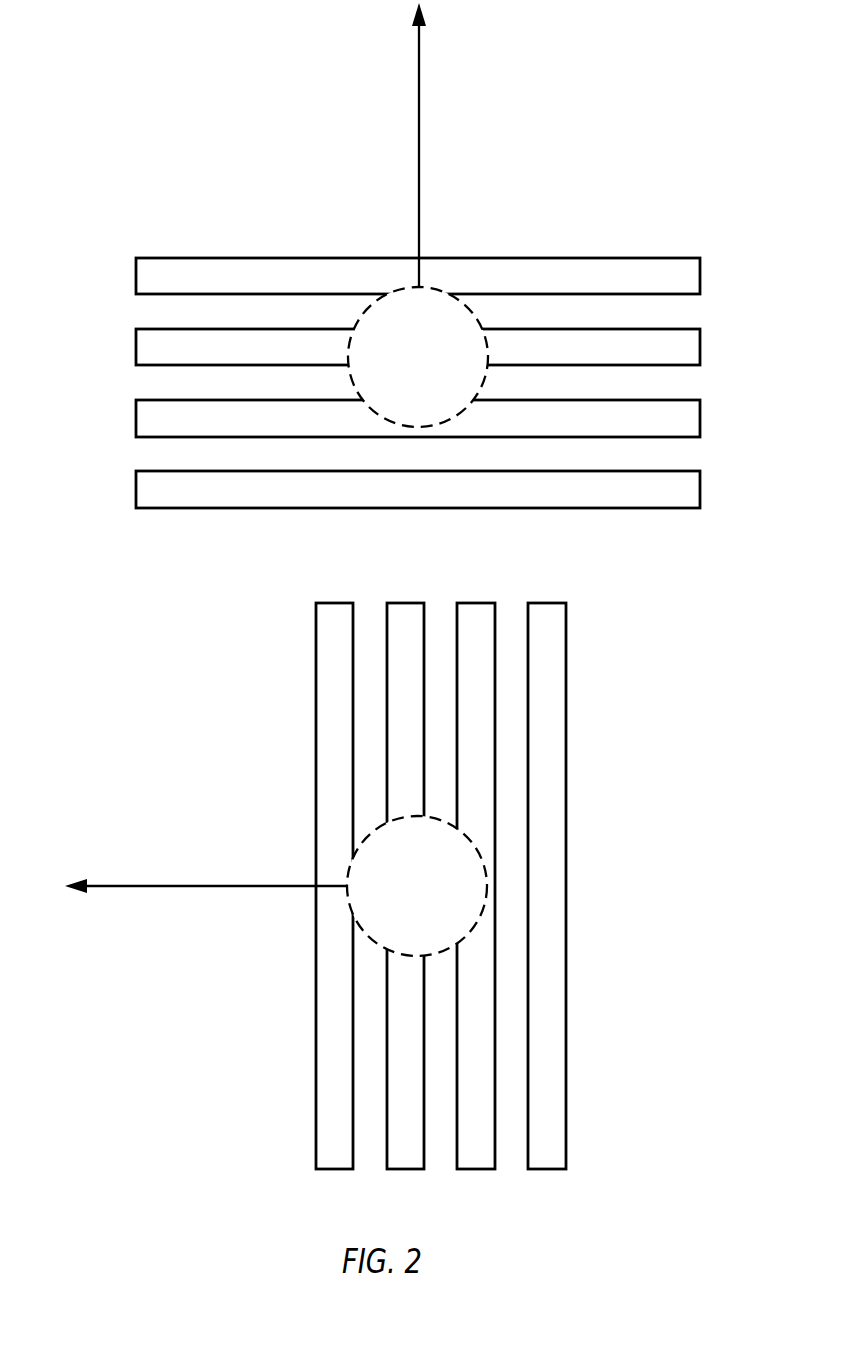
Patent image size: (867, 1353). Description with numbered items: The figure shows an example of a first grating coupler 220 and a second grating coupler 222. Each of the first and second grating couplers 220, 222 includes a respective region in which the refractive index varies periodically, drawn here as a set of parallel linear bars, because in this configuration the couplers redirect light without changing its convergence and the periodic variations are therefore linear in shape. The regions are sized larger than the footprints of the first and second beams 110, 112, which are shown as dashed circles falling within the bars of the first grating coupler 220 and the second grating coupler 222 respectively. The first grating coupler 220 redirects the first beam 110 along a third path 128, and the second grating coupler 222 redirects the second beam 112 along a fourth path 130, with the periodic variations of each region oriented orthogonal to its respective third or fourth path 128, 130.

The first beam 110 is at (490, 382).
The second beam 112 is at (478, 848).
The third path 128 is at (419, 164).
The fourth path 130 is at (185, 887).
The first grating coupler 220 is at (662, 510).
The second grating coupler 222 is at (567, 887).